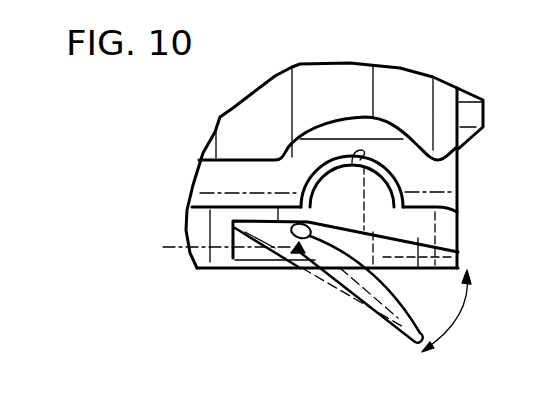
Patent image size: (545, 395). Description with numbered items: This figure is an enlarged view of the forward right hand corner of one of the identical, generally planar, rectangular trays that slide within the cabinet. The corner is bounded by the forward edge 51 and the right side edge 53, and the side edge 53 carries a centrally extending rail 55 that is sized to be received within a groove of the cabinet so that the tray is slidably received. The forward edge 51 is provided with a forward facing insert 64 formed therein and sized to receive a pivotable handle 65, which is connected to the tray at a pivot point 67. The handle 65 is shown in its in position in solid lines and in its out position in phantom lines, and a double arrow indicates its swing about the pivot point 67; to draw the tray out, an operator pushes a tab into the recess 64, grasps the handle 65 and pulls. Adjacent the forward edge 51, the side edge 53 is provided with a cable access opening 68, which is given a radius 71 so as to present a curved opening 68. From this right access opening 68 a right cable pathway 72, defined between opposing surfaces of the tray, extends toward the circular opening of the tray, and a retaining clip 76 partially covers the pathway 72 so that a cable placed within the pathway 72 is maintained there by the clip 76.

The forward edge 51 is at (222, 268).
The side edge 53 is at (483, 101).
The rail 55 is at (468, 128).
The insert 64 is at (238, 250).
The pivotable handle 65 is at (306, 266).
The pivot point 67 is at (352, 246).
The cable access opening 68 is at (437, 175).
The radius 71 is at (457, 212).
The right cable pathway 72 is at (243, 186).
The retaining clip 76 is at (352, 160).